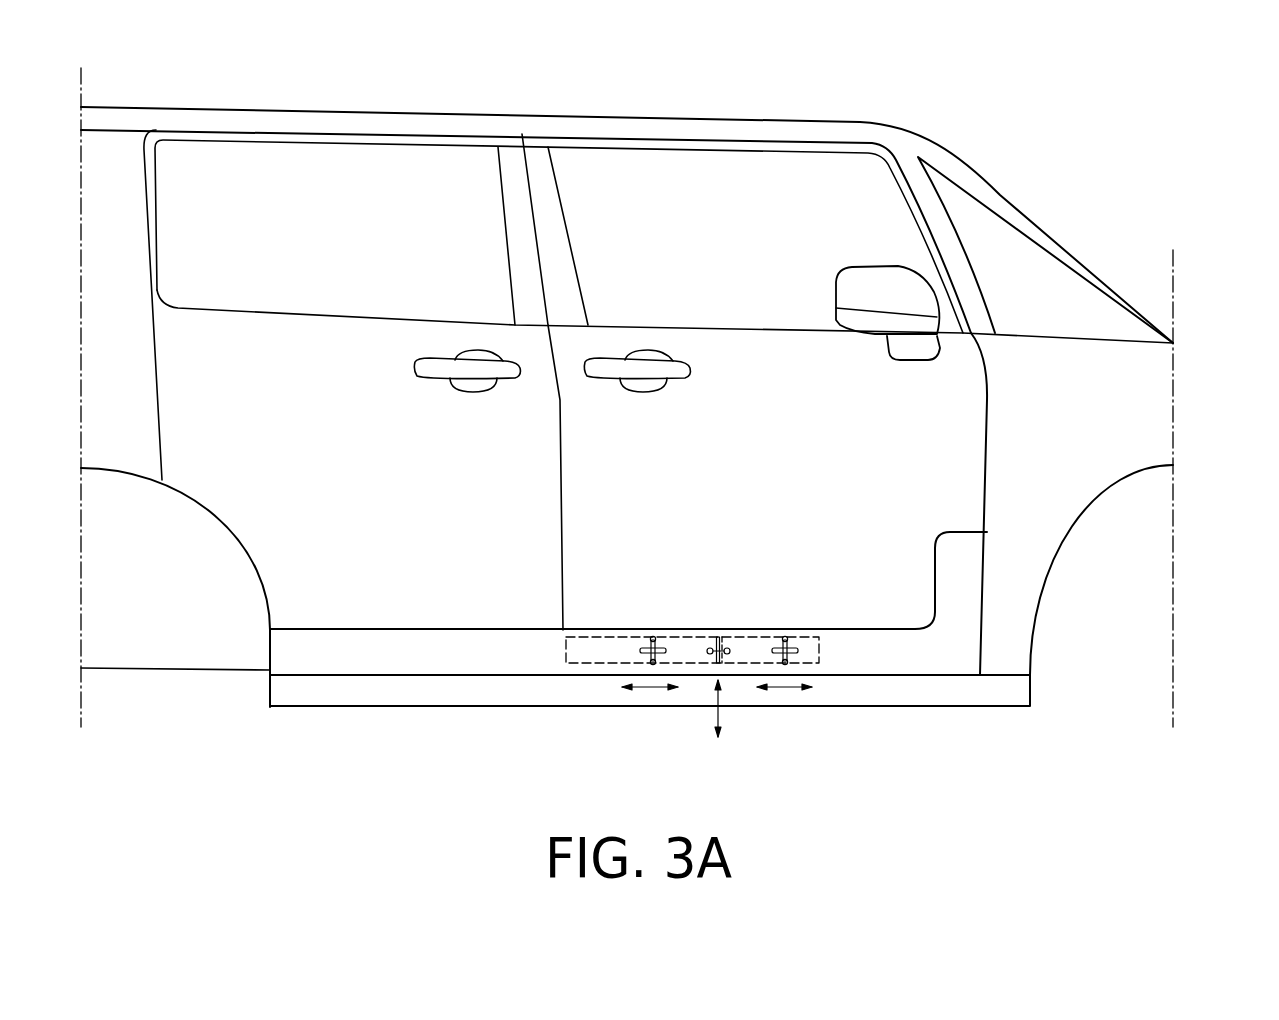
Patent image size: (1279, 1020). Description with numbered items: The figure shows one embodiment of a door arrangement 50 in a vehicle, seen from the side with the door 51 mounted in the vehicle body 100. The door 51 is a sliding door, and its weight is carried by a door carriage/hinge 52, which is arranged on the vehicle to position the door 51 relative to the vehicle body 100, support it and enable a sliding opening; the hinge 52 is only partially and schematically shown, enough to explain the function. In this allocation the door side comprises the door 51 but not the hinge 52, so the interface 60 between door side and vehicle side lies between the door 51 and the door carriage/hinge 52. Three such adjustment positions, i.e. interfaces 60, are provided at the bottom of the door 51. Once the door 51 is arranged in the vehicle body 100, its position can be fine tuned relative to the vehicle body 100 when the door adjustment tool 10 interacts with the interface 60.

The vehicle body 100 is at (1005, 215).
The door arrangement 50 is at (880, 505).
The door 51 is at (882, 557).
The door carriage/hinge 52 is at (582, 648).
The door adjustment tool 10 is at (645, 643).
The interface 60 is at (626, 727).